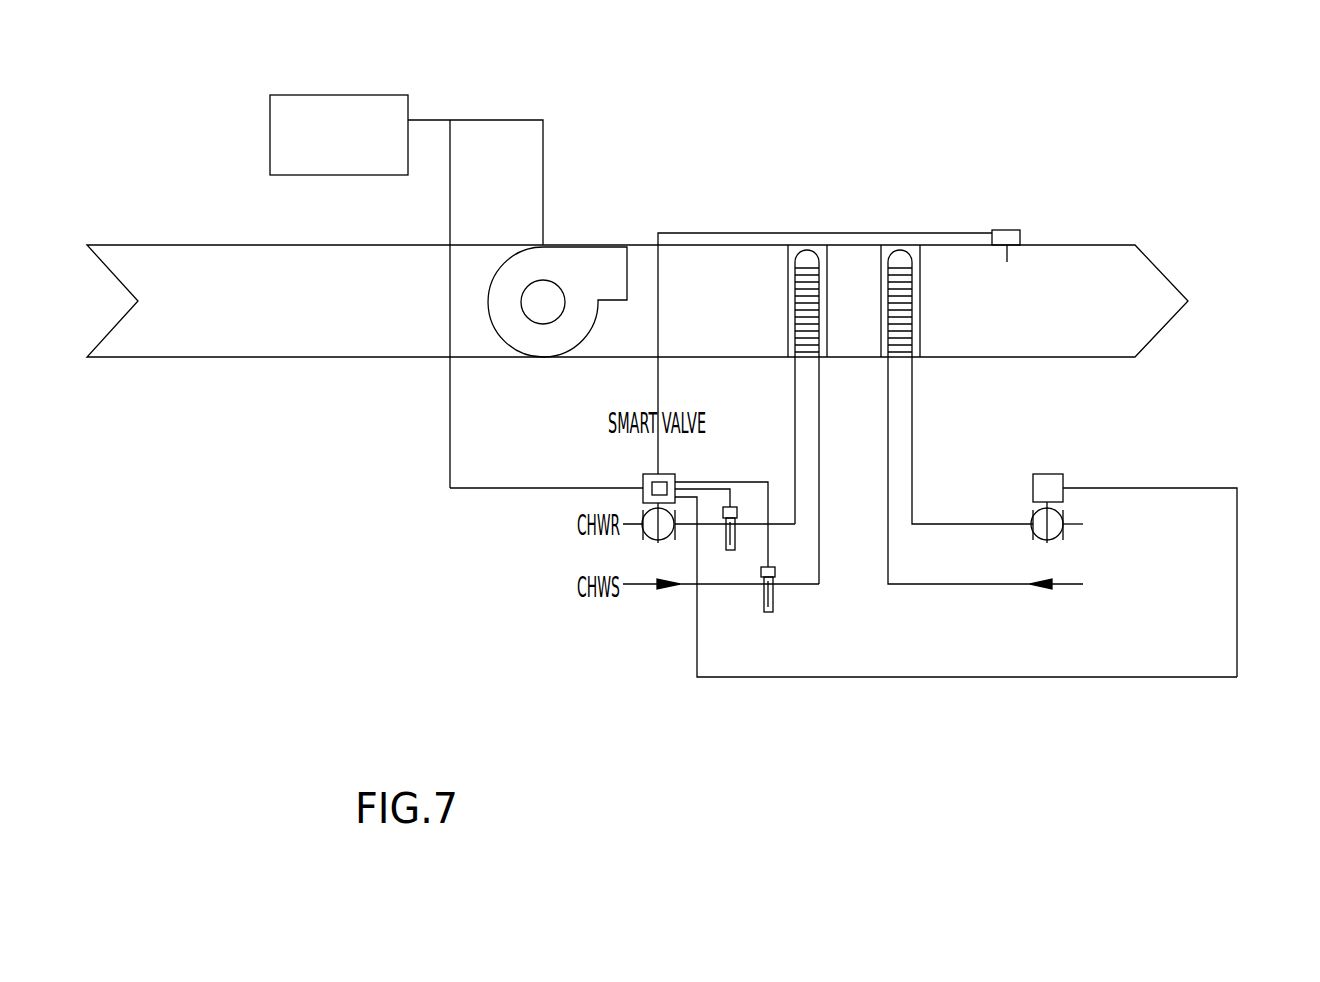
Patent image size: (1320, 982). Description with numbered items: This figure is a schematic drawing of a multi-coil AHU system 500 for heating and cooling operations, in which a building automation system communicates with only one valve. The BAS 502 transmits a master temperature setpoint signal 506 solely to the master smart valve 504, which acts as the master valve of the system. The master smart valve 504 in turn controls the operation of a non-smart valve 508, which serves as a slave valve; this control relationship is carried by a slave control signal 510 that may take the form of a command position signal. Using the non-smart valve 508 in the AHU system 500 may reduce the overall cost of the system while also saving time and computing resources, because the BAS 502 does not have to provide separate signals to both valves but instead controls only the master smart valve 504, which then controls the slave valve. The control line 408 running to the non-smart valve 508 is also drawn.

The HVAC system 500 is at (1137, 112).
The building automation system (BAS) 502 is at (265, 137).
The master setpoint signal 504 is at (620, 498).
The communication line from BAS to smart valve 506 is at (450, 447).
The non-smart valve 508 is at (1077, 473).
The slave control signal 510 is at (940, 677).
The control signal line to non-smart valve 408 is at (1237, 562).